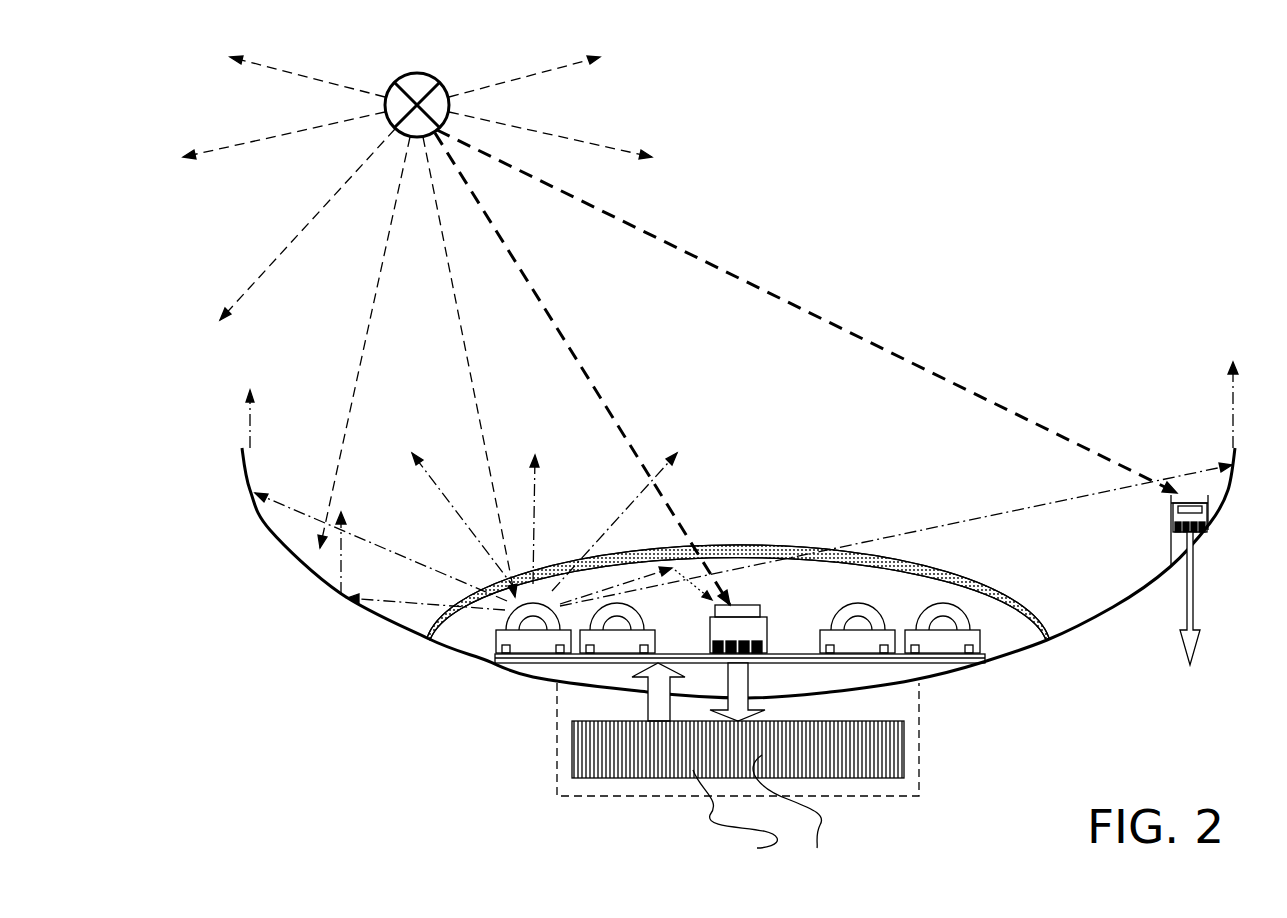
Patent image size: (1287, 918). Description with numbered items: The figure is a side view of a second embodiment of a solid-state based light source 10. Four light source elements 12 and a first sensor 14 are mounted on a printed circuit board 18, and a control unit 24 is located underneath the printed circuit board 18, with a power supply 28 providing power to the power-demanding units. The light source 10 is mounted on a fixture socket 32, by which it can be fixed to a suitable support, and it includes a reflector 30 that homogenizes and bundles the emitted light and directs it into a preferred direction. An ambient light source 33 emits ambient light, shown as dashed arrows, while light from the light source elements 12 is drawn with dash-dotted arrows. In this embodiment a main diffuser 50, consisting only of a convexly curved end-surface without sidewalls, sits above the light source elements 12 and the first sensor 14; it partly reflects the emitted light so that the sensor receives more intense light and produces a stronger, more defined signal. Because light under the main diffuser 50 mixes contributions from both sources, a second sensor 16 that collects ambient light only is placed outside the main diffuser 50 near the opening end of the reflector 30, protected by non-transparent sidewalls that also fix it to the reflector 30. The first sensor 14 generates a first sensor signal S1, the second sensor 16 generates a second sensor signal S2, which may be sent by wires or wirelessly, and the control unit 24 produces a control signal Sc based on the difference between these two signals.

The solid-state based light source 10 is at (926, 143).
The light source elements 12 is at (648, 638).
The first sensor 14 is at (757, 604).
The second sensor 16 is at (1172, 519).
The printed circuit board 18 is at (950, 666).
The control unit 24 is at (600, 768).
The power supply 28 is at (708, 816).
The reflector 30 is at (265, 524).
The fixture socket 32 is at (557, 773).
The ambient light source 33 is at (450, 100).
The main diffuser 50 is at (739, 545).
The first sensor signal S1 is at (745, 684).
The second sensor signal S2 is at (1210, 598).
The control signal Sc is at (648, 710).